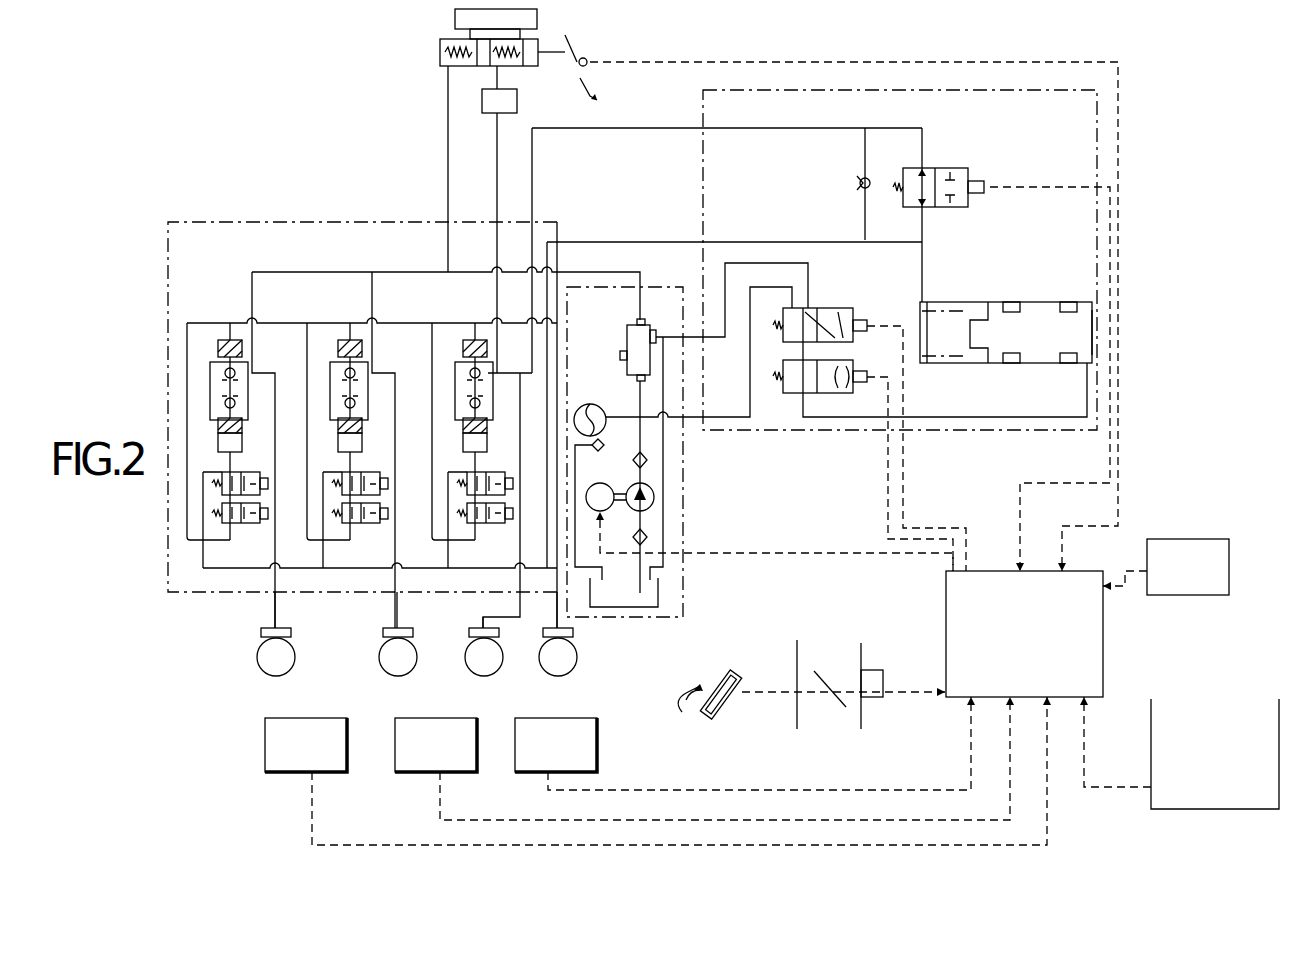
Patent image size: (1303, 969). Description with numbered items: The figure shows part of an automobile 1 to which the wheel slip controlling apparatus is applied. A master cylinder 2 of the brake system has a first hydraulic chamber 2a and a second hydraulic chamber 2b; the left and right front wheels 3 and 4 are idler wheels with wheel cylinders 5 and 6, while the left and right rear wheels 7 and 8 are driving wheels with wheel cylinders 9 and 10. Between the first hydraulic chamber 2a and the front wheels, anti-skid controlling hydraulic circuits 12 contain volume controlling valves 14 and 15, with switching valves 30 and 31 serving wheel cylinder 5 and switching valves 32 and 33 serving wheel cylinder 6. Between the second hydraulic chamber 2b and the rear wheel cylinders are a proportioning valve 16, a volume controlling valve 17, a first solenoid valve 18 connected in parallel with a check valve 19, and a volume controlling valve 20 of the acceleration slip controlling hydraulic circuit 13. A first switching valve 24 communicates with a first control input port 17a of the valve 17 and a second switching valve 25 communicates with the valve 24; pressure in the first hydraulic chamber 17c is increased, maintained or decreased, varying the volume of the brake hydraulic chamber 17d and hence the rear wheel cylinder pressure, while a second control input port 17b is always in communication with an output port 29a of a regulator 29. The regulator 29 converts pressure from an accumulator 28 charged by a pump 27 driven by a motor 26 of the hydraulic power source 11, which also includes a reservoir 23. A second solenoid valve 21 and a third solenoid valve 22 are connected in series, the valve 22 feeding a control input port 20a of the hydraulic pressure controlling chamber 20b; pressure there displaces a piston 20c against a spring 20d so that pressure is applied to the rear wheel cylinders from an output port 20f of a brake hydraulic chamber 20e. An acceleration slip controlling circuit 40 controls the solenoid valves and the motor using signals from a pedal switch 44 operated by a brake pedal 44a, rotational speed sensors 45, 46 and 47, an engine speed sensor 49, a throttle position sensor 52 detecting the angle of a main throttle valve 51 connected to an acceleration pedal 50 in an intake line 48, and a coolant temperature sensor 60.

The brake control system 1 is at (297, 167).
The master cylinder 2 is at (538, 40).
The first hydraulic chamber 2a is at (440, 62).
The second hydraulic chamber 2b is at (518, 68).
The left front wheel 3 is at (282, 675).
The right front wheel 4 is at (404, 675).
The wheel cylinder 5 is at (263, 630).
The wheel cylinder 6 is at (385, 630).
The left rear wheel 7 is at (490, 675).
The right rear wheel 8 is at (564, 675).
The wheel cylinder 9 is at (471, 630).
The wheel cylinder 10 is at (562, 622).
The hydraulic power source 11 is at (655, 617).
The anti-skid controlling hydraulic circuit 12 is at (370, 219).
The acceleration slip controlling hydraulic circuit 13 is at (1003, 92).
The volume controlling valve 14 is at (220, 337).
The volume controlling valve 15 is at (335, 337).
The proportioning valve 16 is at (483, 100).
The volume controlling valve 17 is at (457, 343).
The first control input port 17a is at (488, 457).
The second control input port 17b is at (472, 322).
The first hydraulic chamber 17c is at (487, 433).
The brake hydraulic chamber 17d is at (488, 397).
The first solenoid valve 18 is at (945, 168).
The check valve 19 is at (858, 183).
The volume controlling valve 20 is at (998, 302).
The control input port 20a is at (1085, 363).
The hydraulic pressure controlling chamber 20b is at (1092, 362).
The piston 20c is at (1050, 302).
The spring 20d is at (977, 363).
The brake hydraulic chamber 20e is at (958, 363).
The output port 20f is at (930, 302).
The second solenoid valve 21 is at (848, 312).
The third solenoid valve 22 is at (848, 368).
The reservoir 23 is at (660, 597).
The first switching valve 24 is at (503, 484).
The second switching valve 25 is at (493, 523).
The motor 26 is at (646, 466).
The pump 27 is at (652, 493).
The accumulator 28 is at (590, 404).
The regulator 29 is at (652, 335).
The output port 29a is at (618, 355).
The switching valve 30 is at (242, 472).
The switching valve 31 is at (240, 523).
The switching valve 32 is at (360, 472).
The switching valve 33 is at (357, 523).
The acceleration slip controlling circuit 40 is at (1105, 626).
The pedal switch 44 is at (841, 290).
The brake pedal 44a is at (583, 78).
The rotational speed sensor 45 is at (265, 748).
The rotational speed sensor 46 is at (408, 772).
The rotational speed sensor 47 is at (597, 758).
The throttle valve 48 is at (797, 712).
The engine speed sensor 49 is at (1182, 539).
The acceleration pedal 50 is at (728, 680).
The main throttle valve 51 is at (846, 707).
The throttle position sensor 52 is at (875, 670).
The coolant temperature sensor 60 is at (1214, 690).